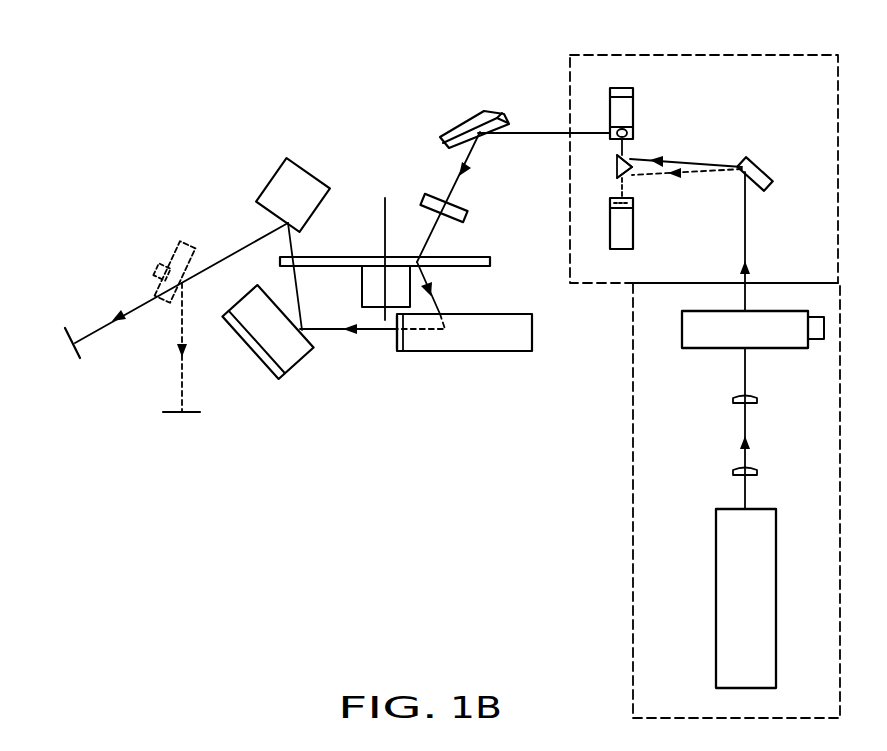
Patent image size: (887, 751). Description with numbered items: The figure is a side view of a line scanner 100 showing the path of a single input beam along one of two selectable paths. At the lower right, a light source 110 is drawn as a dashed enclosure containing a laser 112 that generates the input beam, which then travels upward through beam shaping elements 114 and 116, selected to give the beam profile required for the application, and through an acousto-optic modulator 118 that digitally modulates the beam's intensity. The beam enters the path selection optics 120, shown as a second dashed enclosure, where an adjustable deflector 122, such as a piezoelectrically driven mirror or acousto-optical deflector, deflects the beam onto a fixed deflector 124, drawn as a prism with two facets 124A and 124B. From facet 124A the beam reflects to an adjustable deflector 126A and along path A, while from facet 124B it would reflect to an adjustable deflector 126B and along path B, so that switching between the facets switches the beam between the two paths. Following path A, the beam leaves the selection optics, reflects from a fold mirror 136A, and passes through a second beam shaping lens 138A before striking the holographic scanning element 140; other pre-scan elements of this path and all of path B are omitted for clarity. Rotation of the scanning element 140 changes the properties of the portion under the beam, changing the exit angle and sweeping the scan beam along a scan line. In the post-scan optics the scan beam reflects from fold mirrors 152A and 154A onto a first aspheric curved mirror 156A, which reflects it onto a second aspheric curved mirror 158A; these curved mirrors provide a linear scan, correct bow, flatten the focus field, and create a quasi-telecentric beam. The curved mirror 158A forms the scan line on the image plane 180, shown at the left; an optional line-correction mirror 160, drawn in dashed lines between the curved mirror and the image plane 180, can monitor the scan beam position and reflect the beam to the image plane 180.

The line scanner 100 is at (142, 53).
The light source 110 is at (633, 572).
The laser 112 is at (716, 615).
The beam shaping element 114 is at (757, 471).
The beam shaping element 116 is at (757, 399).
The acousto-optic modulator 118 is at (720, 350).
The path selection optics 120 is at (628, 53).
The adjustable deflector 122 is at (765, 165).
The fixed deflector 124 is at (617, 165).
The facet 124A is at (635, 158).
The facet 124B is at (634, 176).
The adjustable deflector 126A is at (633, 102).
The adjustable deflector 126B is at (633, 237).
The fold mirror 136A is at (453, 125).
The second beam shaping lens 138A is at (433, 193).
The scanning element 140 is at (477, 255).
The fold mirror 152A is at (478, 352).
The fold mirror 154A is at (395, 343).
The first aspheric curved mirror 156A is at (270, 377).
The second aspheric curved mirror 158A is at (313, 167).
The line-correction mirror 160 is at (173, 250).
The image plane 180 is at (63, 328).